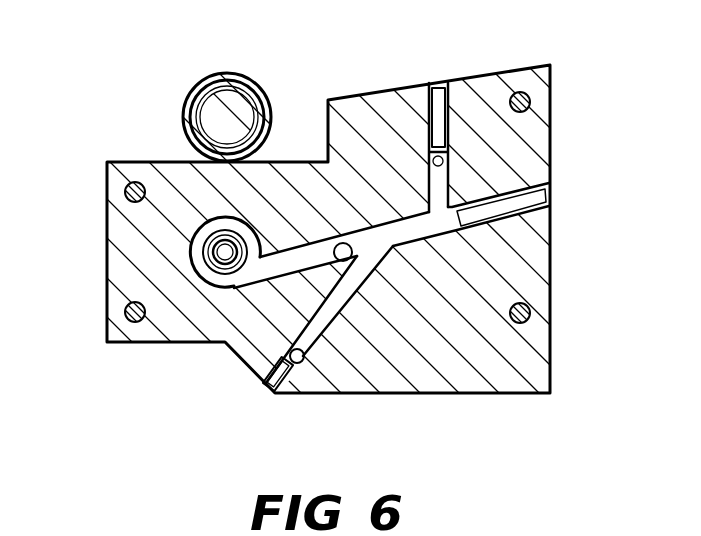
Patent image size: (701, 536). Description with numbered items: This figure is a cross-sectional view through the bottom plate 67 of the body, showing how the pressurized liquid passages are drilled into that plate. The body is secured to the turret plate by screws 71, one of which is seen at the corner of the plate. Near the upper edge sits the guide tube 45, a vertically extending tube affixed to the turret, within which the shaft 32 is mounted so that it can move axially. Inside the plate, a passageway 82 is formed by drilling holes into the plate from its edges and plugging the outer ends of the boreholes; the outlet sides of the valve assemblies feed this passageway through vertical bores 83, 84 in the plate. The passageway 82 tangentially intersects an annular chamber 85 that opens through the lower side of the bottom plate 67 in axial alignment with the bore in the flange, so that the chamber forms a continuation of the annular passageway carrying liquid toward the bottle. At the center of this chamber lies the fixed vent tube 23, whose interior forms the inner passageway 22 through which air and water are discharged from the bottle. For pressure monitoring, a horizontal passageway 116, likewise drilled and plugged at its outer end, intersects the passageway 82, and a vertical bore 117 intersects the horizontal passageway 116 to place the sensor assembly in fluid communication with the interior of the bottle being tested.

The inner passageway 22 is at (207, 264).
The vent tube 23 is at (225, 268).
The shaft 32 is at (190, 103).
The guide tube 45 is at (247, 77).
The bottom plate 67 is at (493, 363).
The screws 71 is at (517, 100).
The passageway 82 is at (430, 228).
The vertical bore 83 is at (343, 243).
The vertical bore 84 is at (427, 153).
The annular chamber 85 is at (193, 258).
The horizontal passageway 116 is at (320, 322).
The vertical bore 117 is at (300, 372).